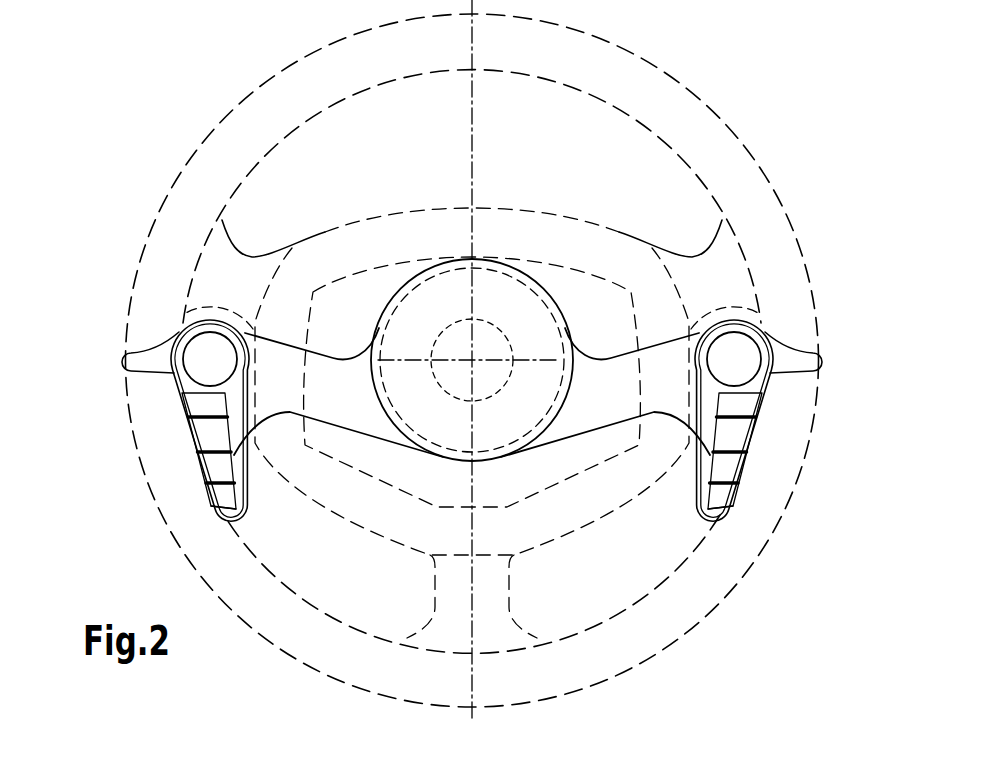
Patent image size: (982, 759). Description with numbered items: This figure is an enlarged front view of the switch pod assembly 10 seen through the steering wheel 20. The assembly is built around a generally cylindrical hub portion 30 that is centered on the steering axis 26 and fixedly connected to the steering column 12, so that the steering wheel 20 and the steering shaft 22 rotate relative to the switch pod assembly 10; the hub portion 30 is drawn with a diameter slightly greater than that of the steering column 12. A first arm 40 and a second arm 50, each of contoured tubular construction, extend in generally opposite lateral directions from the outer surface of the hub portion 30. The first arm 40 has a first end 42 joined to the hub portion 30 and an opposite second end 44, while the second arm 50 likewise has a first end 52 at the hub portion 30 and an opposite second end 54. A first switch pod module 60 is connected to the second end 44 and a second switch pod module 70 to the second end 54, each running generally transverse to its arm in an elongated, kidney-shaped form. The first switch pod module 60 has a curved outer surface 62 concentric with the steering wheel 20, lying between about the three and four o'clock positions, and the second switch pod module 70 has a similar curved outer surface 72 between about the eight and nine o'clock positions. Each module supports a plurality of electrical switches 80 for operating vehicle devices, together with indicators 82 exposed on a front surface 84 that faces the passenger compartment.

The switch pod assembly 10 is at (183, 121).
The steering column 12 is at (513, 282).
The steering wheel 20 is at (258, 122).
The steering shaft 22 is at (453, 319).
The steering axis 26 is at (470, 363).
The hub portion 30 is at (412, 278).
The first arm 40 is at (653, 340).
The first end 42 is at (583, 388).
The second end 44 is at (697, 332).
The second arm 50 is at (315, 387).
The first end 52 is at (362, 392).
The second end 54 is at (252, 385).
The first switch pod module 60 is at (689, 426).
The curved outer surface 62 is at (767, 398).
The second switch pod module 70 is at (255, 426).
The curved outer surface 72 is at (178, 407).
The electrical switches 80 is at (207, 354).
The indicators 82 is at (222, 500).
The front surface 84 is at (238, 433).